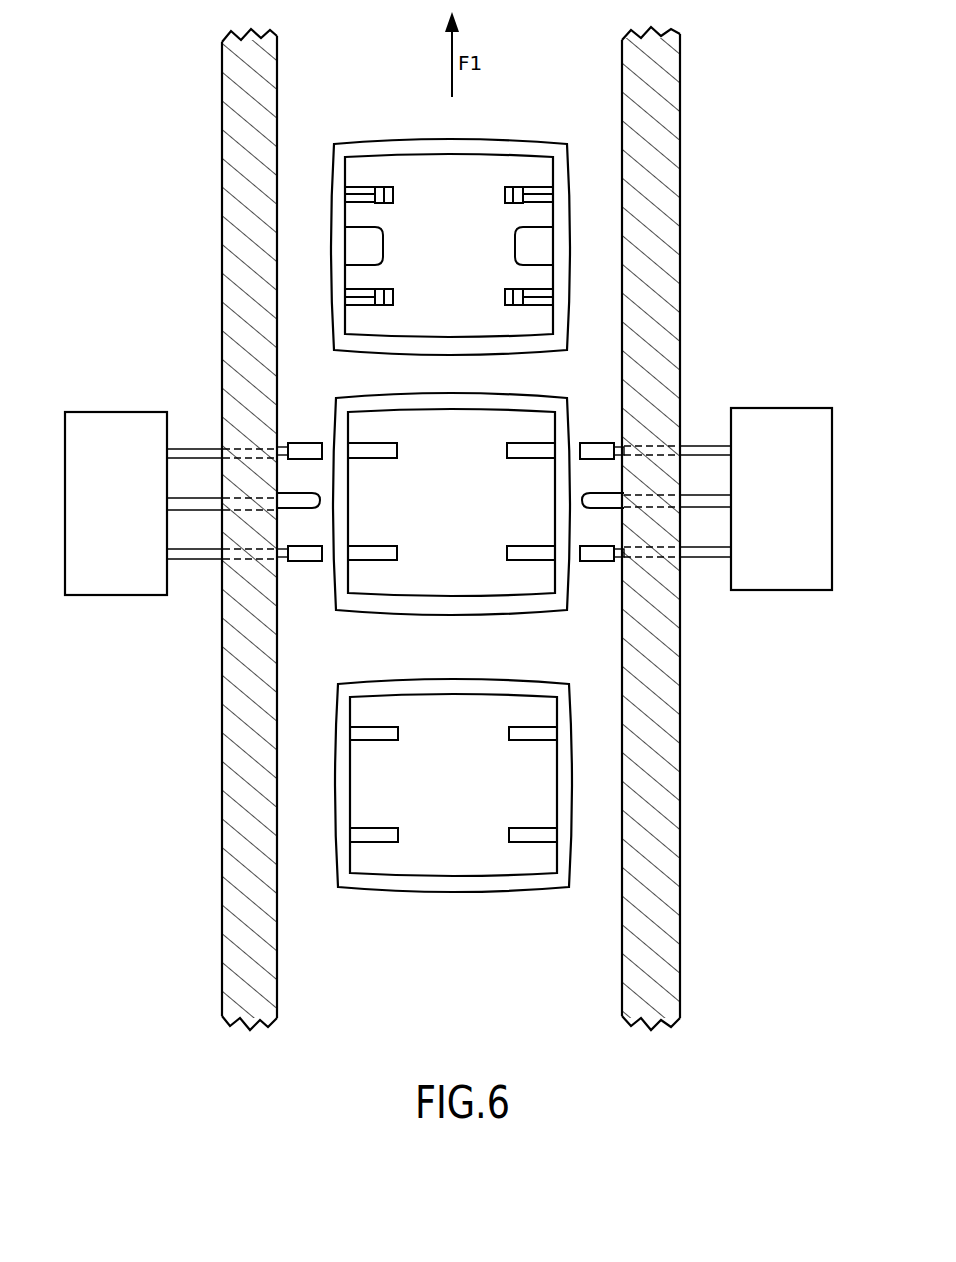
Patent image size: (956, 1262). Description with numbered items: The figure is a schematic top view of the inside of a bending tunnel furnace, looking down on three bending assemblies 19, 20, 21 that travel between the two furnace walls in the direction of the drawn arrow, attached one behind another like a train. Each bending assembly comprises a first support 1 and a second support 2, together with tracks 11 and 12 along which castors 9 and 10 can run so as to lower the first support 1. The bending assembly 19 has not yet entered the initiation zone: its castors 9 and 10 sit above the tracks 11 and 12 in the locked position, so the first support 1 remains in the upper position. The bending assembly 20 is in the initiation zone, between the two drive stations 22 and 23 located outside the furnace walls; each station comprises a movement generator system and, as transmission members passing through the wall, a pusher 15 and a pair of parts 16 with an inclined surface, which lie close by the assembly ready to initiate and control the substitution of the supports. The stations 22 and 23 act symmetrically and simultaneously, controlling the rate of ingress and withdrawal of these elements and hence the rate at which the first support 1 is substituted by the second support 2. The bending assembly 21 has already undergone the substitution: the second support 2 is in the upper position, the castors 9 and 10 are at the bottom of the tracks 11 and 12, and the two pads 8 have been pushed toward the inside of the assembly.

The first support 1 is at (406, 140).
The second support 2 is at (496, 132).
The pad 8 is at (370, 248).
The castor 9 is at (382, 193).
The castor 10 is at (382, 300).
The track 11 is at (505, 197).
The track 12 is at (505, 298).
The pusher 15 is at (310, 499).
The part with an inclined surface 16 is at (300, 450).
The bending assembly 19 is at (357, 906).
The bending assembly 20 is at (355, 627).
The bending assembly 21 is at (319, 148).
The drive station 22 is at (108, 400).
The drive station 23 is at (776, 398).